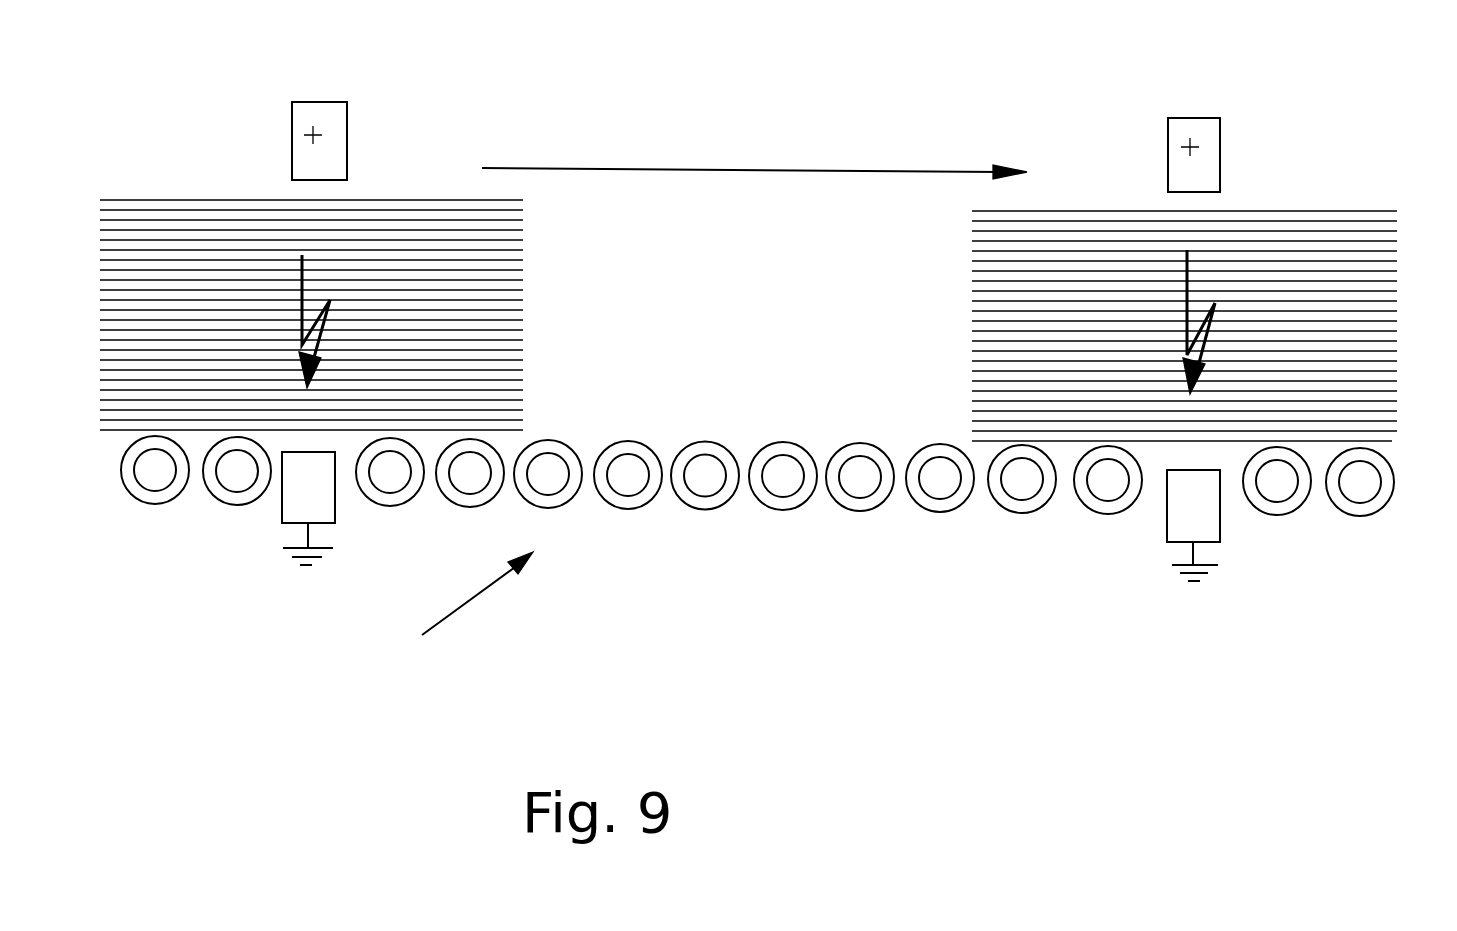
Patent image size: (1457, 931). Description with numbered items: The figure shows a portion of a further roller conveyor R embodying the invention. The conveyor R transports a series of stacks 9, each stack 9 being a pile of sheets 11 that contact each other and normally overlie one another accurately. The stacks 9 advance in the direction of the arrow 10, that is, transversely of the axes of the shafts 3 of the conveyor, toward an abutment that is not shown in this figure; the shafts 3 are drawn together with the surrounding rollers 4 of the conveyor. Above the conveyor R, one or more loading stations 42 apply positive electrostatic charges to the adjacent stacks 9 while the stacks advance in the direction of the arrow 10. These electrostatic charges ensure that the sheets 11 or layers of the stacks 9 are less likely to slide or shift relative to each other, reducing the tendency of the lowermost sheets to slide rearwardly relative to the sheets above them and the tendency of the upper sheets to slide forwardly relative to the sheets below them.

The shaft 3 is at (158, 474).
The roller ring 4 is at (140, 501).
The stack 9 is at (1305, 218).
The arrow 10 is at (754, 152).
The sheet 11 is at (1392, 441).
The loading station 42 is at (318, 78).
The roller conveyor R is at (477, 607).